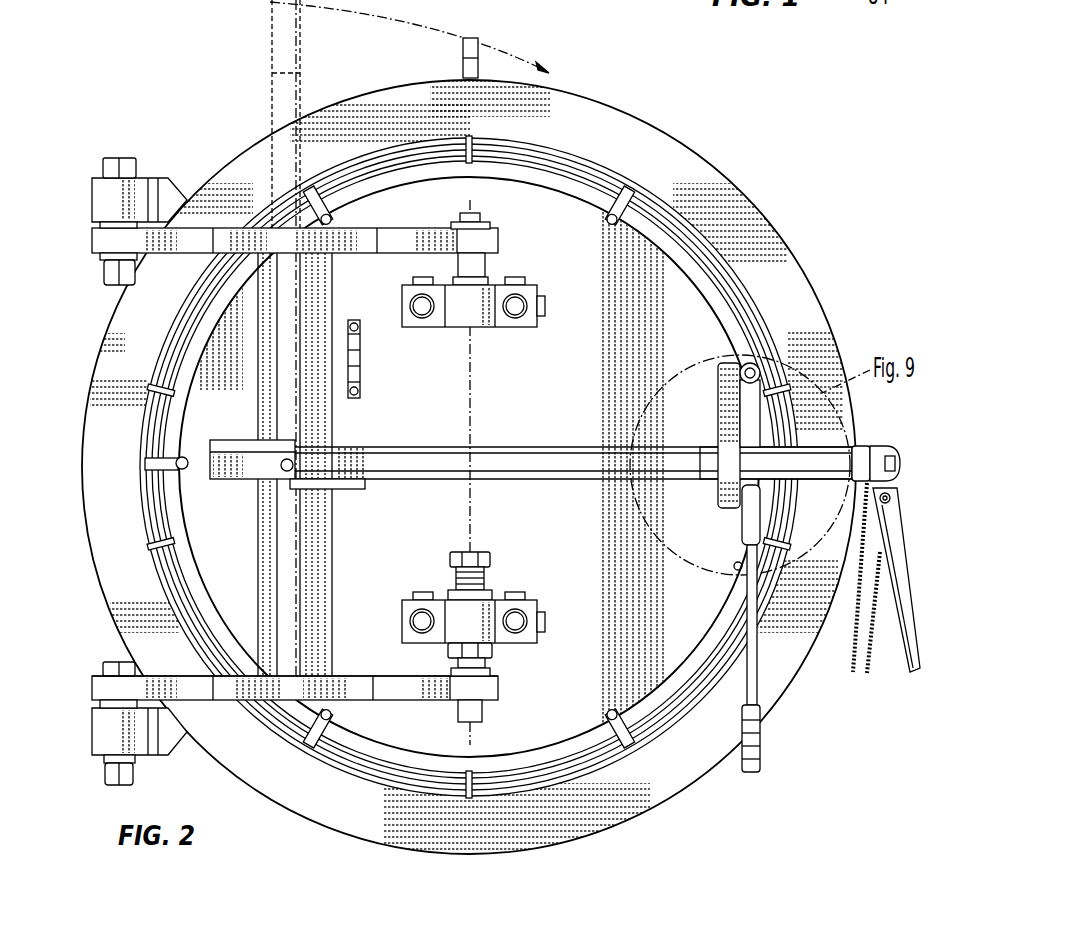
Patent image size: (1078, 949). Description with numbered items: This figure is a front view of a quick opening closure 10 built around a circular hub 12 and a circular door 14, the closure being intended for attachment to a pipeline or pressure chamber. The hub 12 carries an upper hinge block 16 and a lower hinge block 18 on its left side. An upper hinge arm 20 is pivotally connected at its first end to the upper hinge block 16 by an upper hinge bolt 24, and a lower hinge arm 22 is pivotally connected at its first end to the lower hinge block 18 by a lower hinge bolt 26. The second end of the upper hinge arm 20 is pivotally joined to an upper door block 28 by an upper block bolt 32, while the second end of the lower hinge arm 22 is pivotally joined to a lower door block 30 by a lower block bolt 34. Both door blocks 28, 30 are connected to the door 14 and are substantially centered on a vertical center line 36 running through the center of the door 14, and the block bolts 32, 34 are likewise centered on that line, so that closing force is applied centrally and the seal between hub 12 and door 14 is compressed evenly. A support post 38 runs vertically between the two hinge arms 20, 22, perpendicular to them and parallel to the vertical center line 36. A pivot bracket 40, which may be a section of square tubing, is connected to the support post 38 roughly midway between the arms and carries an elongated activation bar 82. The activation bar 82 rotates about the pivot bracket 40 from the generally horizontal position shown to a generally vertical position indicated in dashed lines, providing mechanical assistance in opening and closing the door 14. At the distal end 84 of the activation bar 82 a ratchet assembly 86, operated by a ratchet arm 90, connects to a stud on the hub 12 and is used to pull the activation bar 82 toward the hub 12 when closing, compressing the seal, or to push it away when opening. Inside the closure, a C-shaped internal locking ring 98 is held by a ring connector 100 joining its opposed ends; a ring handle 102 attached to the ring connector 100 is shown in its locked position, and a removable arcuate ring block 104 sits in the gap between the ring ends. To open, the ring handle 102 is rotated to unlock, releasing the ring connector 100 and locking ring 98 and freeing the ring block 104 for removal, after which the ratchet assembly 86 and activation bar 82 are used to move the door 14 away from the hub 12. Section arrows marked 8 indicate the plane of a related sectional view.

The section line 8- 8 is at (202, 463).
The quick opening closure 10 is at (172, 98).
The circular hub 12 is at (712, 182).
The circular door 14 is at (742, 320).
The upper hinge block 16 is at (92, 188).
The lower hinge block 18 is at (100, 735).
The upper hinge arm 20 is at (135, 258).
The lower hinge arm 22 is at (150, 675).
The upper hinge bolt 24 is at (130, 165).
The lower hinge bolt 26 is at (104, 666).
The upper door block 28 is at (532, 324).
The lower door block 30 is at (532, 608).
The upper block bolt 32 is at (478, 263).
The lower block bolt 34 is at (486, 712).
The vertical center line 36 is at (475, 364).
The support post 38 is at (322, 580).
The pivot bracket 40 is at (350, 489).
The activation bar 82 is at (270, 66).
The distal end 84 is at (866, 446).
The ratchet assembly 86 is at (906, 454).
The ratchet arm 90 is at (893, 522).
The internal locking ring 98 is at (526, 762).
The ring connector 100 is at (722, 425).
The ring handle 102 is at (752, 662).
The ring block 104 is at (770, 442).